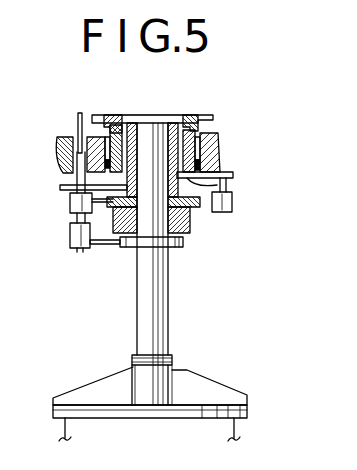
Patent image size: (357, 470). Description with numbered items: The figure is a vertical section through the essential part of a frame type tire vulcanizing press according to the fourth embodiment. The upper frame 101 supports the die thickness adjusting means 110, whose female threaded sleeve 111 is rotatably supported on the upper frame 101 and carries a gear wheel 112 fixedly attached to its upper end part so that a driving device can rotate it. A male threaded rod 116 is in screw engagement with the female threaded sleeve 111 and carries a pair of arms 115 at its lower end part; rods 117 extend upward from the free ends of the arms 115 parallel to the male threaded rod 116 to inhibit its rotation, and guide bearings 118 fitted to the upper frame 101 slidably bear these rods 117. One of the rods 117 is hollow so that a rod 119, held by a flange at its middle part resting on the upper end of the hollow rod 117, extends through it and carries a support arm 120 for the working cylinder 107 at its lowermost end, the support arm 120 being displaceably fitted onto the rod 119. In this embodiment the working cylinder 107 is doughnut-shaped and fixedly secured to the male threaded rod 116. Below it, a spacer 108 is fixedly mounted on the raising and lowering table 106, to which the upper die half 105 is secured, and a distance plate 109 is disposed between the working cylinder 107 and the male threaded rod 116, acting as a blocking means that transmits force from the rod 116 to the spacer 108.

The upper frame 101 is at (220, 140).
The upper die half 105 is at (242, 430).
The raising and lowering table 106 is at (236, 388).
The working cylinder 107 is at (191, 227).
The spacer 108 is at (169, 318).
The distance plate 109 is at (184, 245).
The die thickness adjusting means 110 is at (176, 113).
The female threaded sleeve 111 is at (234, 174).
The gear wheel 112 is at (112, 113).
The arms 115 is at (233, 208).
The male threaded rod 116 is at (134, 123).
The rods 117 is at (227, 186).
The guide bearings 118 is at (74, 137).
The rod 119 is at (78, 113).
The support arm 120 is at (92, 246).